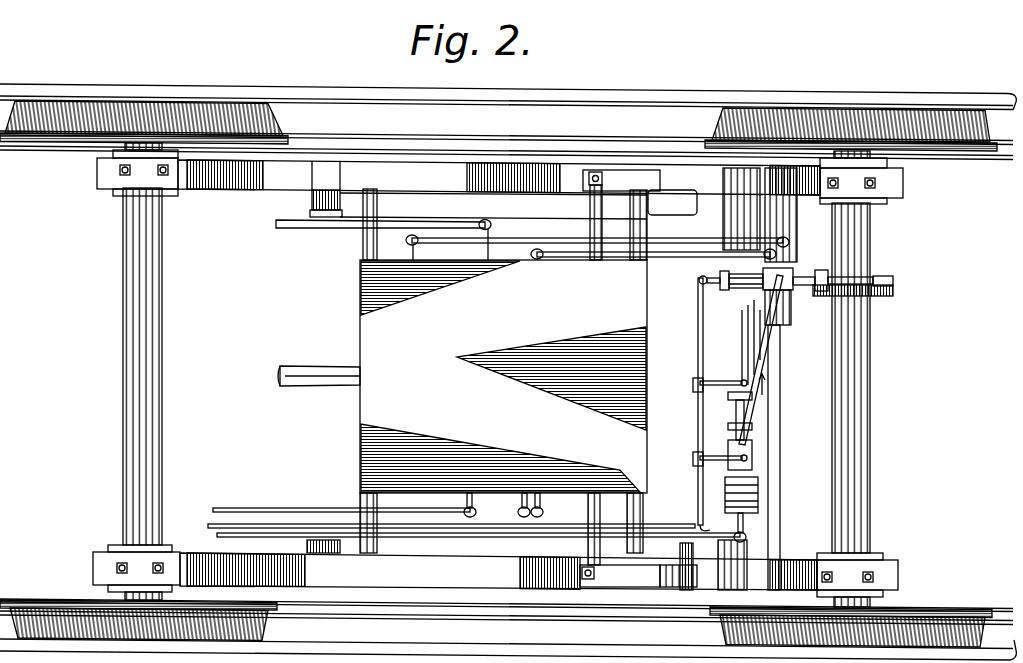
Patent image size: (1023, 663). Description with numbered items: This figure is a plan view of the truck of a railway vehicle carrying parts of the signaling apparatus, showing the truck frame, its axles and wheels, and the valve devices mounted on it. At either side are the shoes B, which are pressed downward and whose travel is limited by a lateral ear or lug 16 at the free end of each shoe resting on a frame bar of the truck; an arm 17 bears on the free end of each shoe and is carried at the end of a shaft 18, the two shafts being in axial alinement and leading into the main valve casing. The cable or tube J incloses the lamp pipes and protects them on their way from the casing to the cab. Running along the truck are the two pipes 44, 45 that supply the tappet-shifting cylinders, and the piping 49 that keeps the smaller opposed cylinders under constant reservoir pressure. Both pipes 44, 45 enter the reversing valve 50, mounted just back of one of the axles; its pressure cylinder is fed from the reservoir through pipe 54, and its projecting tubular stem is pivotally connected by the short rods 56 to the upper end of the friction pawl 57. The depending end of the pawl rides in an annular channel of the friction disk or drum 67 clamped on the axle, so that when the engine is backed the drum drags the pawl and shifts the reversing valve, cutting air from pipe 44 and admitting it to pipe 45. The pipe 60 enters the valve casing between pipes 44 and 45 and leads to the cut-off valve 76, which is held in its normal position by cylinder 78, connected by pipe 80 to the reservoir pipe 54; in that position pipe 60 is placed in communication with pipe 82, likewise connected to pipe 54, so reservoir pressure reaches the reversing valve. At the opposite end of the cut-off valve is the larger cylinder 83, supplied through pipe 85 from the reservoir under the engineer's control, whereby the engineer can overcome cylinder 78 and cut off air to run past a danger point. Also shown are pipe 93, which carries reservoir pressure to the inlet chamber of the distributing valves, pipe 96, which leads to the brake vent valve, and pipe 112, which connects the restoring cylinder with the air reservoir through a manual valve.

The shoes B is at (518, 205).
The cable or tube J is at (300, 383).
The lateral ear or lug 16 is at (672, 570).
The arm 17 is at (622, 176).
The shaft 18 is at (590, 224).
The pipe 44 is at (447, 250).
The pipe 45 is at (580, 259).
The piping 49 is at (295, 520).
The reversing valve 50 is at (760, 283).
The pipe 54 is at (697, 357).
The short rods 56 is at (840, 270).
The friction pawl 57 is at (882, 276).
The pipe 60 is at (776, 333).
The friction disk or drum 67 is at (882, 297).
The valve 76 is at (771, 445).
The cylinder 78 is at (752, 406).
The pipe 80 is at (712, 386).
The pipe 82 is at (700, 462).
The cylinder 83 is at (752, 486).
The pipe 85 is at (746, 537).
The pipe 93 is at (497, 503).
The pipe 96 is at (545, 505).
The pipe 112 is at (332, 230).